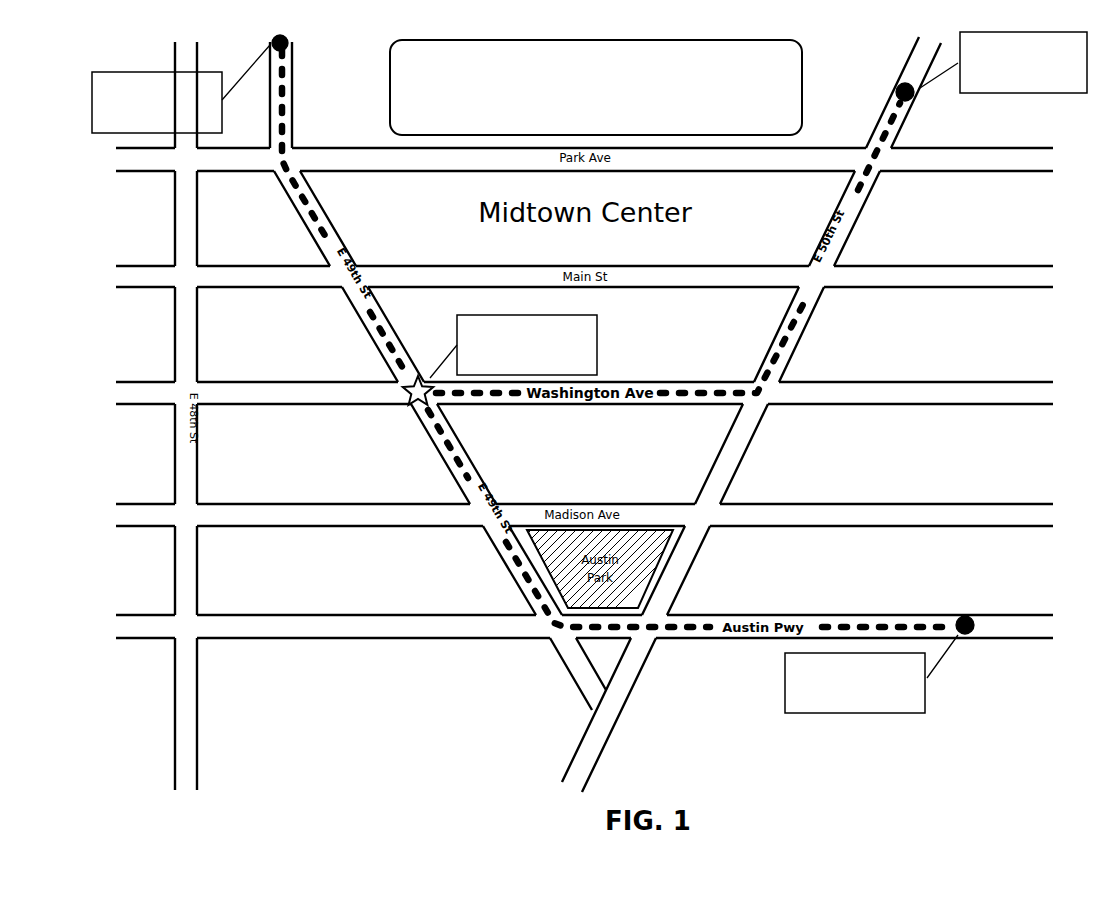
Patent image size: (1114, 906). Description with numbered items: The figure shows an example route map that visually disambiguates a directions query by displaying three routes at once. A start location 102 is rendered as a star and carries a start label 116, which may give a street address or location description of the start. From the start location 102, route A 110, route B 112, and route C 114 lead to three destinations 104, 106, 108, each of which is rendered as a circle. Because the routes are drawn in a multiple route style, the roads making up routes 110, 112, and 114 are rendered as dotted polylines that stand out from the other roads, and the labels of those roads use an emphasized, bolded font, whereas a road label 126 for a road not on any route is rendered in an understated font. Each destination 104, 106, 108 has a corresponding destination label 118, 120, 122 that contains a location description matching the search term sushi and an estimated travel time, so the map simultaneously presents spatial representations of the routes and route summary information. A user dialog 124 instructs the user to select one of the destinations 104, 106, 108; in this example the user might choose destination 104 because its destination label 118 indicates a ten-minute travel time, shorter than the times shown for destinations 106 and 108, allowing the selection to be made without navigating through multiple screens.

The start location 102 is at (410, 405).
The destination 104 is at (290, 58).
The destination 106 is at (898, 83).
The destination 108 is at (962, 616).
The route A 110 is at (325, 238).
The route B 112 is at (862, 197).
The route C 114 is at (515, 548).
The start label 116 is at (598, 343).
The destination label 118 is at (163, 133).
The destination label 120 is at (1030, 95).
The destination label 122 is at (861, 713).
The user dialog 124 is at (700, 137).
The road label 126 is at (717, 477).